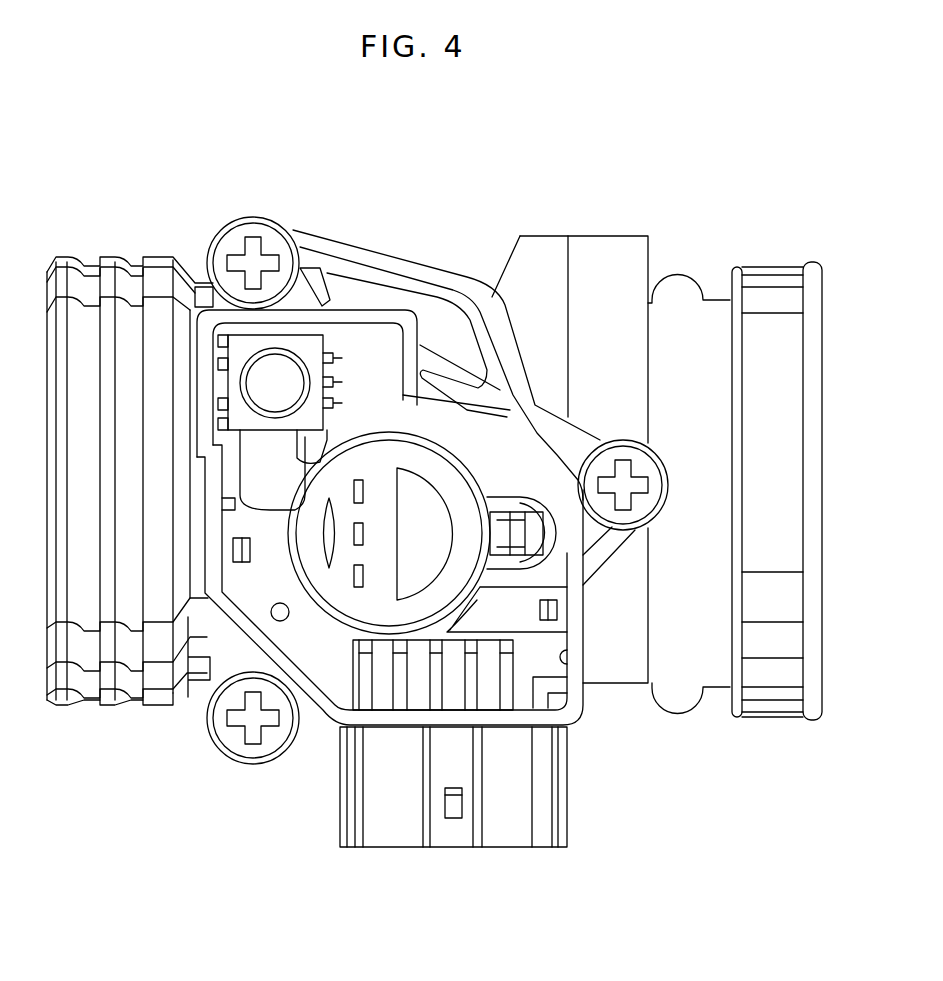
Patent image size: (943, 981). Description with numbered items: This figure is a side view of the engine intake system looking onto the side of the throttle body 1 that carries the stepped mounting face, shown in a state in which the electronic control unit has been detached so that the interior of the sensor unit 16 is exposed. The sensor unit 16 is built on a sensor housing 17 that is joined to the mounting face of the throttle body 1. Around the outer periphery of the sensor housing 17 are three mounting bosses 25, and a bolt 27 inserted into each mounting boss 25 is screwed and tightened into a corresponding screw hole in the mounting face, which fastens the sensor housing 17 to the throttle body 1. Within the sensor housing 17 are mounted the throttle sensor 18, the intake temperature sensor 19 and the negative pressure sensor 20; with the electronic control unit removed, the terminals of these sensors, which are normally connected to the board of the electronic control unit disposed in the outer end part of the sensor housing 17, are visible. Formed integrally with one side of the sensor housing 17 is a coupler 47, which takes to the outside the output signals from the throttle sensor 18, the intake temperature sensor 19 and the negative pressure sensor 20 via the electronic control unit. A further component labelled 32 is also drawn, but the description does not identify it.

The throttle body 1 is at (690, 340).
The sensor unit 16 is at (498, 393).
The sensor housing 17 is at (570, 440).
The throttle sensor 18 is at (313, 560).
The intake temperature sensor 19 is at (553, 535).
The negative pressure sensor 20 is at (283, 388).
The mounting boss 25 is at (260, 215).
The bolt 27 is at (233, 245).
The motor 32 is at (252, 423).
The coupler 47 is at (567, 788).